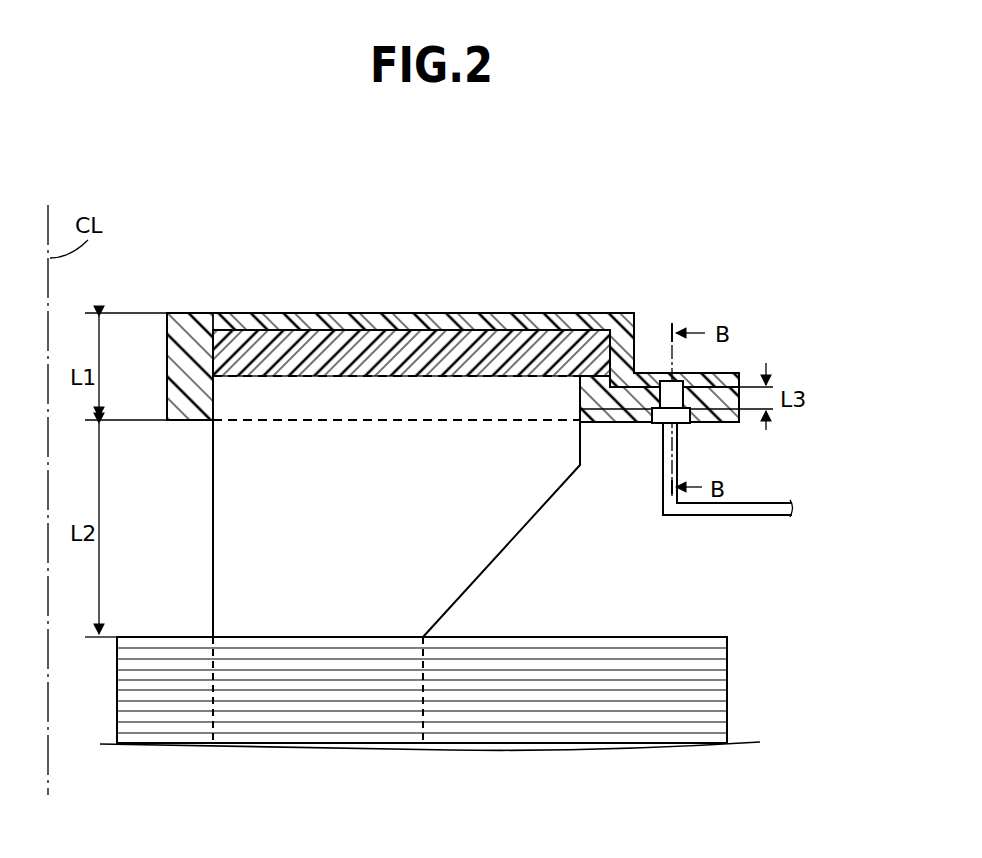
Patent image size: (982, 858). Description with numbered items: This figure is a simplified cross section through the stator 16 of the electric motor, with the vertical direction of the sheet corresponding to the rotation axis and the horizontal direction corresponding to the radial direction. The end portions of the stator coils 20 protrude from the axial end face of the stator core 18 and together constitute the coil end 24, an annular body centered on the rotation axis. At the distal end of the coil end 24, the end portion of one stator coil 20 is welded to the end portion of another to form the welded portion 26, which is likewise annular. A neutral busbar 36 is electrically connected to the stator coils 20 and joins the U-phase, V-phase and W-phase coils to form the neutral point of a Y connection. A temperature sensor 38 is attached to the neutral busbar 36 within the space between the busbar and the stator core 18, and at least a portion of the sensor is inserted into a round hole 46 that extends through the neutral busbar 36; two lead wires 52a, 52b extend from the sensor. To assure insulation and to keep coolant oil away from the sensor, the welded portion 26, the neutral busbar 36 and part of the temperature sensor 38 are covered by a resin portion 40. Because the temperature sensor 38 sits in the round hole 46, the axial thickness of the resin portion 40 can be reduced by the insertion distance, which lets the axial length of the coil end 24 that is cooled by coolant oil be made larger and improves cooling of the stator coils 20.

The stator 16 is at (431, 182).
The stator core 18 is at (610, 725).
The stator coils 20 is at (457, 541).
The coil end 24 is at (536, 539).
The welded portion 26 is at (420, 358).
The neutral busbar 36 is at (624, 400).
The temperature sensor 38 is at (687, 431).
The resin portion 40 is at (197, 345).
The round hole 46 is at (662, 392).
The lead wire 52a is at (763, 503).
The lead wire 52b is at (735, 516).